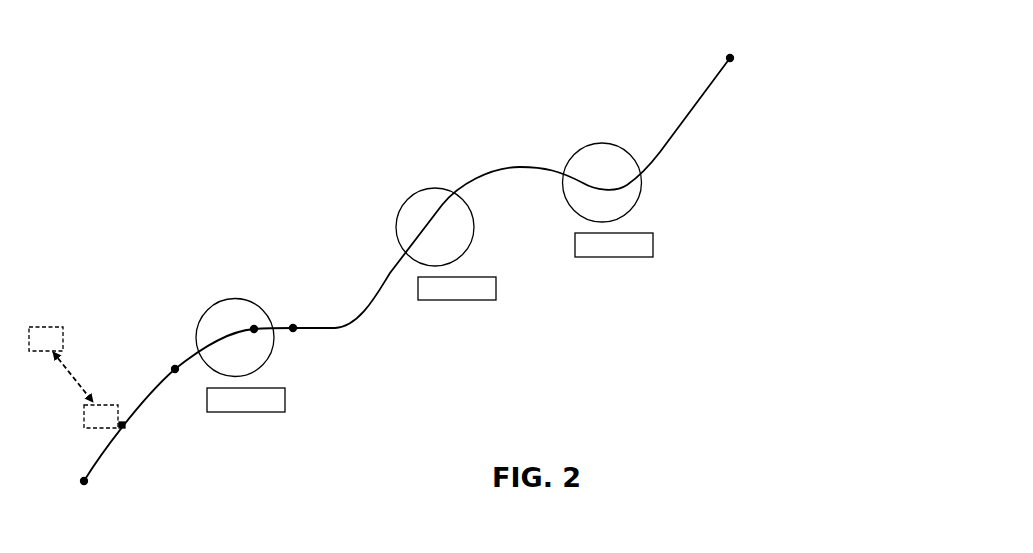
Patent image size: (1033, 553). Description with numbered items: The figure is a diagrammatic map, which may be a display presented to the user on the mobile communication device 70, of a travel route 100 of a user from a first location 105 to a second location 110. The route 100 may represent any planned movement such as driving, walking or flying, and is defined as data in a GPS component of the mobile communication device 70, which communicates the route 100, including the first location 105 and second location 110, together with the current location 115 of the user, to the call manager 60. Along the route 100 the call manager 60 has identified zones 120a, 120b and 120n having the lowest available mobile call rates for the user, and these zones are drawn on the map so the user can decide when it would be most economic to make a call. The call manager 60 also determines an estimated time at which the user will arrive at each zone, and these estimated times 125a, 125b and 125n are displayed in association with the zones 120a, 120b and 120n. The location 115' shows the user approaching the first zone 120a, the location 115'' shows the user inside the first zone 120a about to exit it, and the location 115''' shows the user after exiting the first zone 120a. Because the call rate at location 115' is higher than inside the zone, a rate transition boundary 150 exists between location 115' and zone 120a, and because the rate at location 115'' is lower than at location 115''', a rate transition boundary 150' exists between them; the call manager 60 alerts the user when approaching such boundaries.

The travel route 100 is at (493, 167).
The first location 105 is at (92, 483).
The second location 110 is at (727, 56).
The current location 115 is at (183, 439).
The location 115' is at (133, 349).
The location 115'' is at (258, 284).
The location 115''' is at (327, 368).
The first zone 120a is at (215, 298).
The zone 120b is at (410, 190).
The zone 120n is at (585, 142).
The estimated time 125a is at (285, 413).
The estimated time 125b is at (493, 303).
The estimated time 125n is at (645, 260).
The rate transition boundary 150 is at (158, 310).
The rate transition boundary 150' is at (317, 286).
The call manager 60 is at (61, 364).
The mobile communication device 70 is at (101, 416).